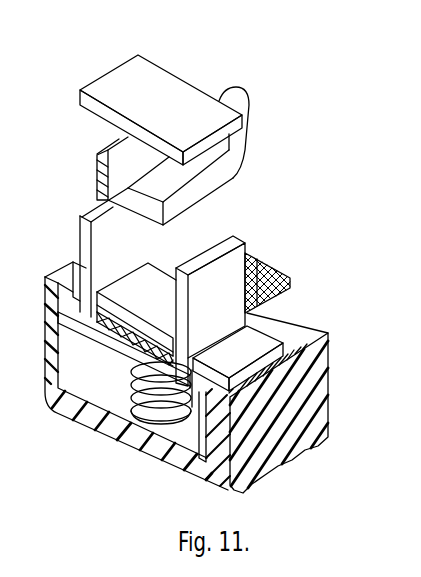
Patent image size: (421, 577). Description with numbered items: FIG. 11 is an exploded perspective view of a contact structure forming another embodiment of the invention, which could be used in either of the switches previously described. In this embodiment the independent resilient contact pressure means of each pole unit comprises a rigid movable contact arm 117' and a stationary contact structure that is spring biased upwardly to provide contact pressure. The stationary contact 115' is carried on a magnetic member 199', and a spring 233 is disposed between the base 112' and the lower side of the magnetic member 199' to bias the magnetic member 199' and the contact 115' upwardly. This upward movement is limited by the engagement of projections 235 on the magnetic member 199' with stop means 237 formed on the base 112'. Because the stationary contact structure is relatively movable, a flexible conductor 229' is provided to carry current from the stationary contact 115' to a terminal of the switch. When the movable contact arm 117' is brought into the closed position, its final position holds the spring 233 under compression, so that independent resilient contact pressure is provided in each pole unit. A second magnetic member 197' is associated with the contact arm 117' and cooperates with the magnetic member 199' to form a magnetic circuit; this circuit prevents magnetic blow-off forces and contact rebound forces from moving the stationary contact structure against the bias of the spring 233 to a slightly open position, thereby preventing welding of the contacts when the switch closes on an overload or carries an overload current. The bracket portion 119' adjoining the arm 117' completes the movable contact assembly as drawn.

The base 112' is at (211, 377).
The stationary contact 115' is at (125, 272).
The movable contact arm 117' is at (95, 161).
The right arm of bracket 119' is at (230, 156).
The magnetic member 197' is at (161, 101).
The magnetic member 199' is at (232, 295).
The flexible conductor 229' is at (282, 276).
The spring 233 is at (130, 381).
The projections 235 is at (191, 410).
The stop means 237 is at (281, 338).